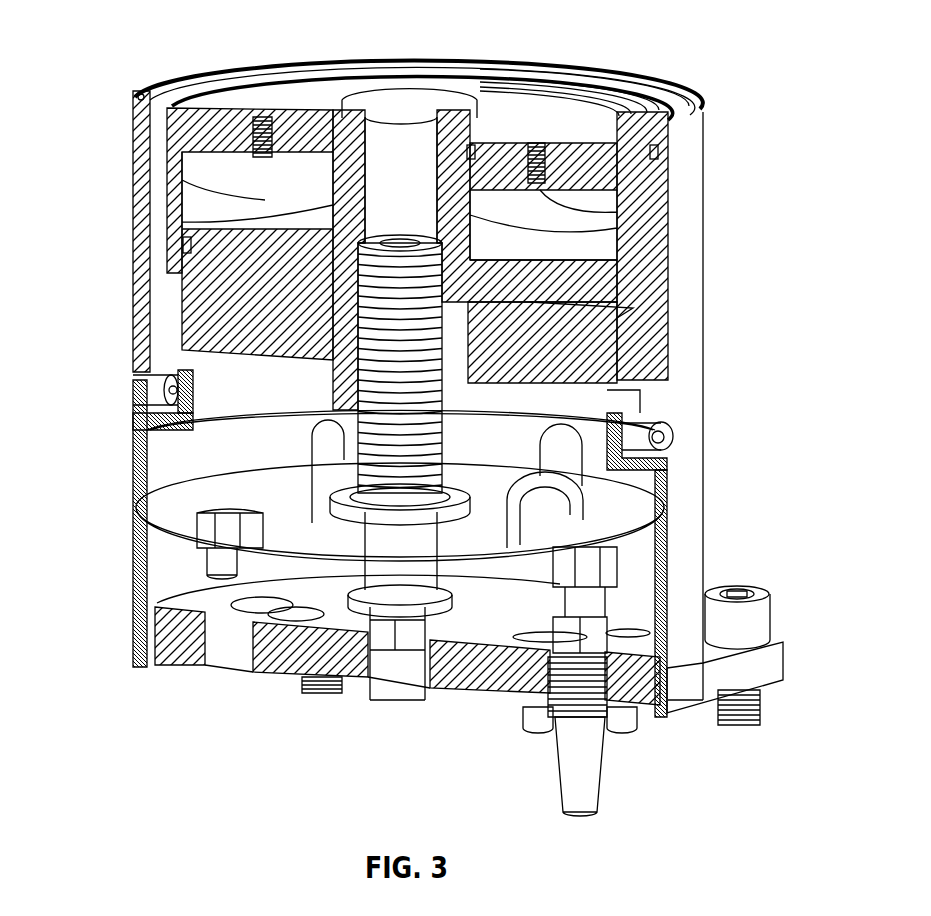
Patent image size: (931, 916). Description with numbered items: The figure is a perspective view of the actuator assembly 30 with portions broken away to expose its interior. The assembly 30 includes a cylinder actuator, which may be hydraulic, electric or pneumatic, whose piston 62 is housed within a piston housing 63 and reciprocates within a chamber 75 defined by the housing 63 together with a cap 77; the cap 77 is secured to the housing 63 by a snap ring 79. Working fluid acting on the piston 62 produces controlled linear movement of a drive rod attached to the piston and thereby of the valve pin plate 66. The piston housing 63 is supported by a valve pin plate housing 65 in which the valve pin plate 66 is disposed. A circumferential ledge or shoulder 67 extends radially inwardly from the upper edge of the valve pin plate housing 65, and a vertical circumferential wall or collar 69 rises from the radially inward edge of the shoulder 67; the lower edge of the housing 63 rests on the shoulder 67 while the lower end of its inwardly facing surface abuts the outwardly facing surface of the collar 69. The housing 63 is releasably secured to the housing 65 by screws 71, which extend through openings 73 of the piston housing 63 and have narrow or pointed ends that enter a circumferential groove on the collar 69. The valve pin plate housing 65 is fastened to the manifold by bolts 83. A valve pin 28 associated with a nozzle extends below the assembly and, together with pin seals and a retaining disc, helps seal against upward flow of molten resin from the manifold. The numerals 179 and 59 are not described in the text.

The actuator assembly 30 is at (136, 50).
The piston housing 63 is at (697, 232).
The chamber 75 is at (225, 198).
The piston 62 is at (583, 285).
The cap 77 is at (180, 330).
The snap ring 79 is at (145, 378).
The screws 71 is at (150, 398).
The valve pin plate housing 65 is at (703, 557).
The valve pin plate 66 is at (173, 562).
The collar 69 is at (645, 412).
The openings 73 is at (670, 438).
The shoulder 67 is at (668, 472).
The base plate 179 is at (290, 656).
The bolts 83 is at (767, 614).
The stud 59 is at (757, 695).
The valve pin 28 is at (583, 760).